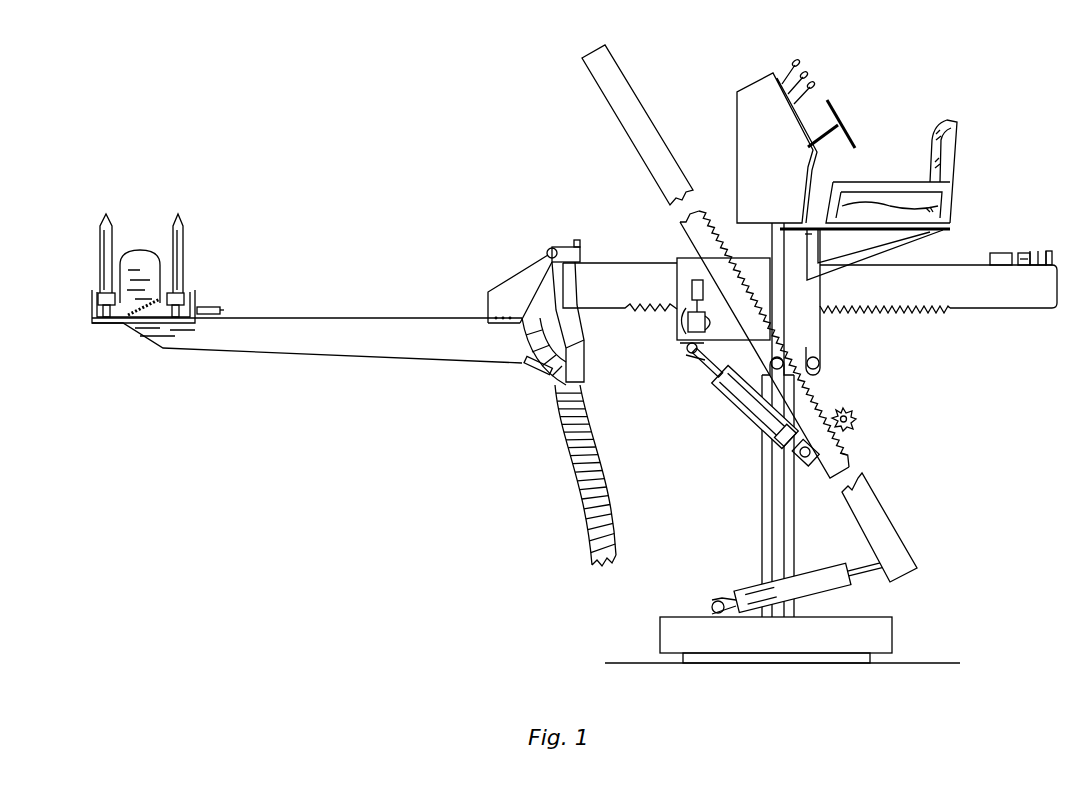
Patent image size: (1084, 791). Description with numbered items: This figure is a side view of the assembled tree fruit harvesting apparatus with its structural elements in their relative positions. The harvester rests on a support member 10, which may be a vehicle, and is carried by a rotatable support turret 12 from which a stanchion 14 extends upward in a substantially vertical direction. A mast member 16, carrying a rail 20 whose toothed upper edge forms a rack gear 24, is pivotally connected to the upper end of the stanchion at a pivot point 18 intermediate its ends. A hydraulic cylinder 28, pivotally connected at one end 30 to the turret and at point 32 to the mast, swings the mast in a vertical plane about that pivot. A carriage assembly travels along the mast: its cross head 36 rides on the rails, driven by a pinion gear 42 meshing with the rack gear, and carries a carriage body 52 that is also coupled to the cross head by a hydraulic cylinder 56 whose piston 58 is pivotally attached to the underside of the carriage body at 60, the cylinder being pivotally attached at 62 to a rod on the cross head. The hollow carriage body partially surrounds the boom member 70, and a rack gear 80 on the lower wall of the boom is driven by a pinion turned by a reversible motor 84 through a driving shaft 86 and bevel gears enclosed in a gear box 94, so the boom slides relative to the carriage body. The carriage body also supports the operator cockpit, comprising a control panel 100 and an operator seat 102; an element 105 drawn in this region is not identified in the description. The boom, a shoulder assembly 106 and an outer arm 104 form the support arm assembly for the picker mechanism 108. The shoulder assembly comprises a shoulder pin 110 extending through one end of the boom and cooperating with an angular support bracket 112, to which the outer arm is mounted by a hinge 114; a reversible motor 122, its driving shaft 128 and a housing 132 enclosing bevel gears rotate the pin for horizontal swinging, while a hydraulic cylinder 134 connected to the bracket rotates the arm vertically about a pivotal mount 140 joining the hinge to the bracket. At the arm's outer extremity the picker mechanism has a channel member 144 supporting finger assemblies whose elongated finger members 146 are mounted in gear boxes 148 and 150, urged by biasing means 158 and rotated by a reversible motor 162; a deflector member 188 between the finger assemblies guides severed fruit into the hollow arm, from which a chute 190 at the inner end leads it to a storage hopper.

The support member 10 is at (903, 663).
The rotatable support turret 12 is at (875, 616).
The stanchion 14 is at (795, 525).
The mast member 16 is at (648, 97).
The pivot point 18 is at (770, 363).
The rail 20 is at (869, 489).
The rack gear 24 is at (849, 447).
The hydraulic cylinder 28 is at (801, 572).
The cylinder end pivot 30 is at (716, 603).
The mast connection point 32 is at (899, 559).
The cross head 36 is at (816, 374).
The pinion gear 42 is at (848, 410).
The carriage body 52 is at (742, 268).
The hydraulic cylinder 56 is at (760, 414).
The piston 58 is at (706, 370).
The piston pivot 60 is at (690, 353).
The cylinder pivot 62 is at (800, 458).
The boom member 70 is at (626, 300).
The rack gear 80 is at (905, 316).
The reversible motor 84 is at (692, 290).
The driving shaft 86 is at (682, 322).
The gear box 94 is at (711, 327).
The control panel 100 is at (795, 115).
The operator seat 102 is at (930, 140).
The outer arm 104 is at (300, 356).
The platform 105 is at (790, 245).
The shoulder assembly 106 is at (554, 245).
The picker mechanism 108 is at (98, 241).
The shoulder pin 110 is at (581, 327).
The angular support bracket 112 is at (585, 367).
The hinge 114 is at (488, 288).
The reversible motor 122 is at (1000, 252).
The driving shaft 128 is at (1030, 252).
The housing 132 is at (1048, 266).
The hydraulic cylinder 134 is at (538, 372).
The pivotal mount 140 is at (546, 256).
The channel member 144 is at (92, 321).
The finger member 146 is at (100, 270).
The gear box 148 is at (99, 302).
The gear box 150 is at (183, 298).
The biasing means 158 is at (128, 318).
The reversible motor 162 is at (218, 307).
The deflector member 188 is at (120, 262).
The chute 190 is at (590, 508).